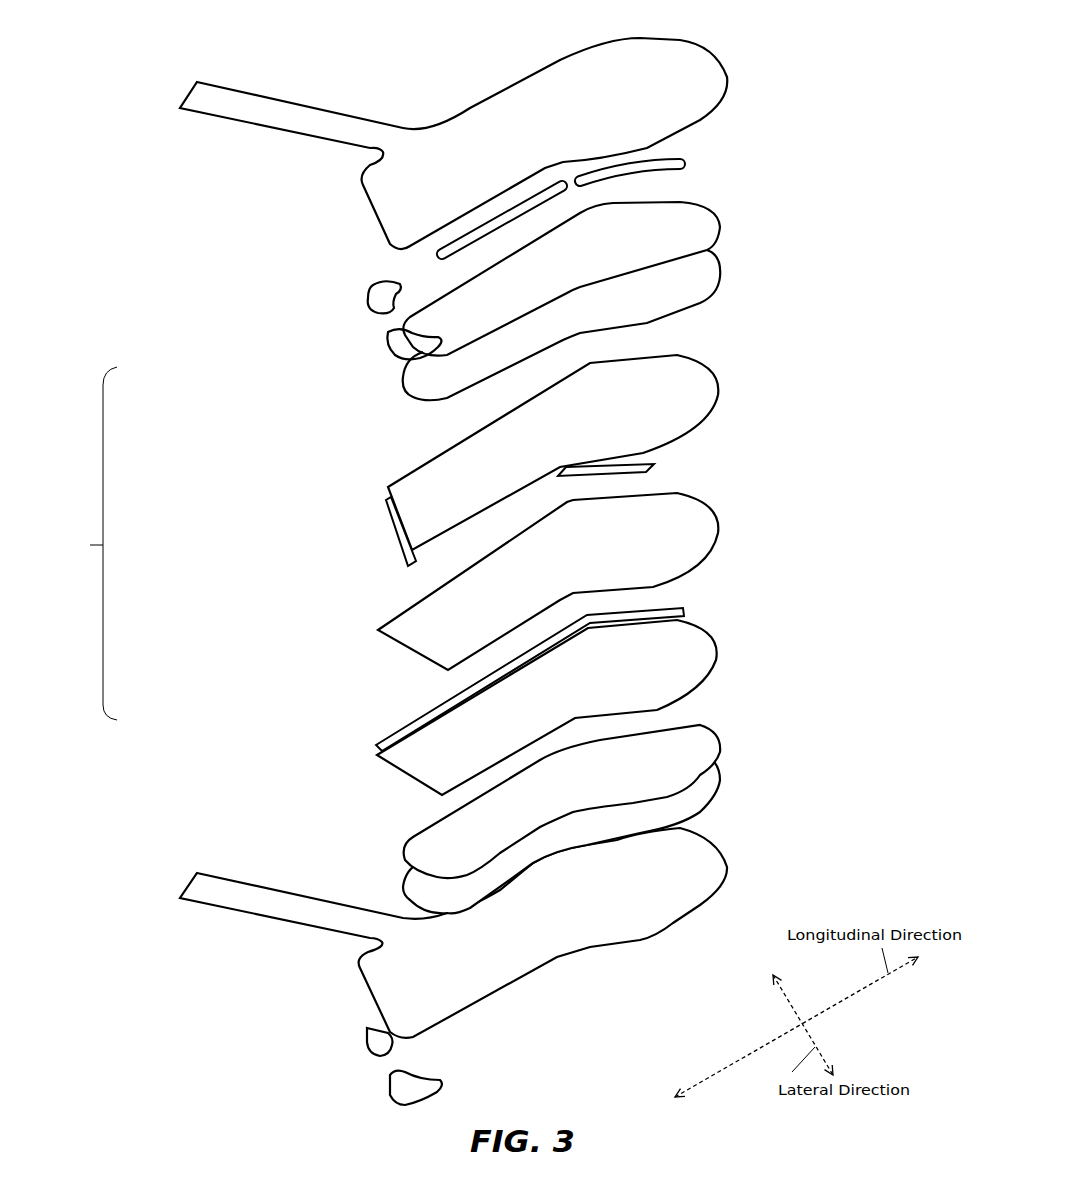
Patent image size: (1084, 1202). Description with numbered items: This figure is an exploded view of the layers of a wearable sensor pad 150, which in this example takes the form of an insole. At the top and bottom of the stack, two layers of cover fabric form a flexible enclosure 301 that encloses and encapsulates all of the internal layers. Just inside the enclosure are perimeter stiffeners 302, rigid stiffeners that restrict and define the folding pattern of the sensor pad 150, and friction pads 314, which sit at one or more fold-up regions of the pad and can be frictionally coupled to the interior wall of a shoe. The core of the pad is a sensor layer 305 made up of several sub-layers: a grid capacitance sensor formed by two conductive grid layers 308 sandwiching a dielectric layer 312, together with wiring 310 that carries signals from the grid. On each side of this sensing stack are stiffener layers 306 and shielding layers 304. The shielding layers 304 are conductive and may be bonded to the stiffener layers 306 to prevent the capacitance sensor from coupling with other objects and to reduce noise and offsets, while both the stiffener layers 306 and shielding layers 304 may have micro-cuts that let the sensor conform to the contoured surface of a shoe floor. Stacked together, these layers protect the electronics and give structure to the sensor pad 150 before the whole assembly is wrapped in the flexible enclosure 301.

The sensor pad 150 is at (843, 102).
The flexible enclosure 301 is at (363, 990).
The perimeter stiffeners 302 is at (467, 235).
The shielding layers 304 is at (800, 828).
The sensor layer 305 is at (80, 543).
The stiffener layers 306 is at (800, 747).
The conductive grid layers 308 is at (800, 688).
The wiring 310 is at (600, 475).
The dielectric layer 312 is at (415, 655).
The friction pads 314 is at (373, 1053).